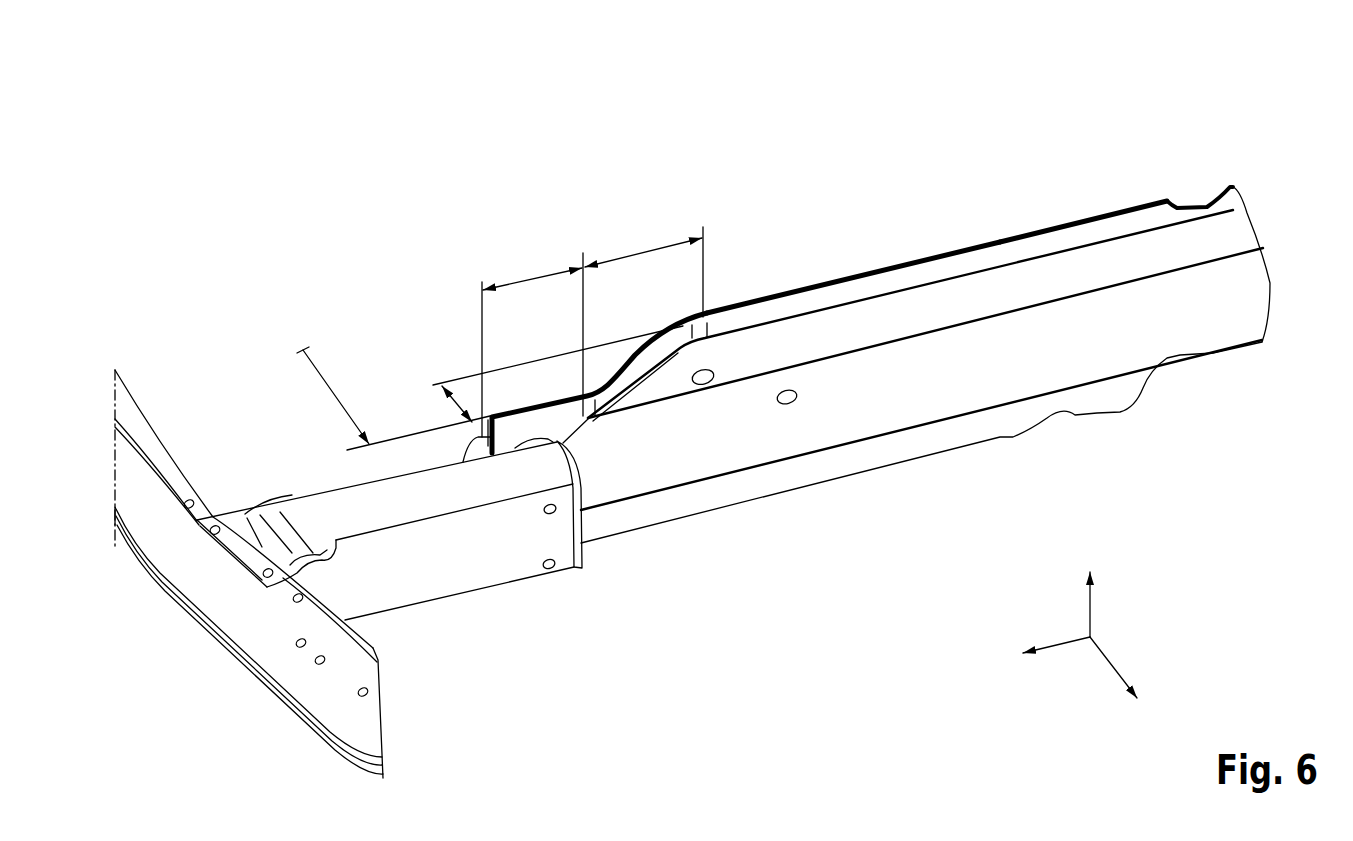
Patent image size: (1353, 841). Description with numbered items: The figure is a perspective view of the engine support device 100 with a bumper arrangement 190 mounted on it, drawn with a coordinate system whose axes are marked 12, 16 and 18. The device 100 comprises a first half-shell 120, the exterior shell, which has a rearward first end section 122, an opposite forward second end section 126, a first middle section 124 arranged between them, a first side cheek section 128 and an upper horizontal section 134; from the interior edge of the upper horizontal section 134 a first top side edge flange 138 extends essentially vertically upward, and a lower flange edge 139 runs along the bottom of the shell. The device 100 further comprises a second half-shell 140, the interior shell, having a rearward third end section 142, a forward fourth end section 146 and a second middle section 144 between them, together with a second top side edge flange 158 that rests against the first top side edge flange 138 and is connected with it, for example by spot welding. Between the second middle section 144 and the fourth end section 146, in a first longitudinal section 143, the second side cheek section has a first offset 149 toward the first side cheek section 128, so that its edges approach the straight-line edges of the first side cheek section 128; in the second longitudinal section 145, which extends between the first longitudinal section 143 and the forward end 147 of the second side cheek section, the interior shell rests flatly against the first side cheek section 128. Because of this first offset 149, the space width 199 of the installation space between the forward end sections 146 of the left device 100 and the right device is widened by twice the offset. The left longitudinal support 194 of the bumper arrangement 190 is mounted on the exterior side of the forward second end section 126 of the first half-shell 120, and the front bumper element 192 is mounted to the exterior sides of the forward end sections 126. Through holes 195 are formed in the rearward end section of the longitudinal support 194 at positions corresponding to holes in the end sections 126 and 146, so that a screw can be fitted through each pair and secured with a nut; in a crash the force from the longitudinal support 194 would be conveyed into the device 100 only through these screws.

The engine support device 100 is at (752, 157).
The x direction (longitudinal axis) 12 is at (1060, 647).
The y direction (transverse axis) 16 is at (1112, 667).
The z direction (vertical axis) 18 is at (1092, 612).
The first half-shell 120 is at (784, 446).
The first end section 122 is at (1250, 383).
The first middle section 124 is at (947, 466).
The second end section 126 is at (593, 554).
The first side cheek section 128 is at (848, 425).
The upper horizontal section 134 is at (913, 310).
The first top side edge flange 138 is at (1095, 238).
The lower flange edge 139 is at (705, 500).
The second half-shell 140 is at (849, 270).
The third end section 142 is at (1199, 170).
The first longitudinal section 143 is at (645, 250).
The second middle section 144 is at (966, 238).
The second longitudinal section 145 is at (534, 277).
The fourth end section 146 is at (469, 351).
The forward end 147 is at (472, 448).
The first offset 149 is at (455, 404).
The second top side edge flange 158 is at (1052, 223).
The bumper arrangement 190 is at (213, 679).
The front bumper element 192 is at (212, 597).
The longitudinal support 194 is at (445, 573).
The through holes 195 is at (556, 516).
The space width 199 is at (330, 390).